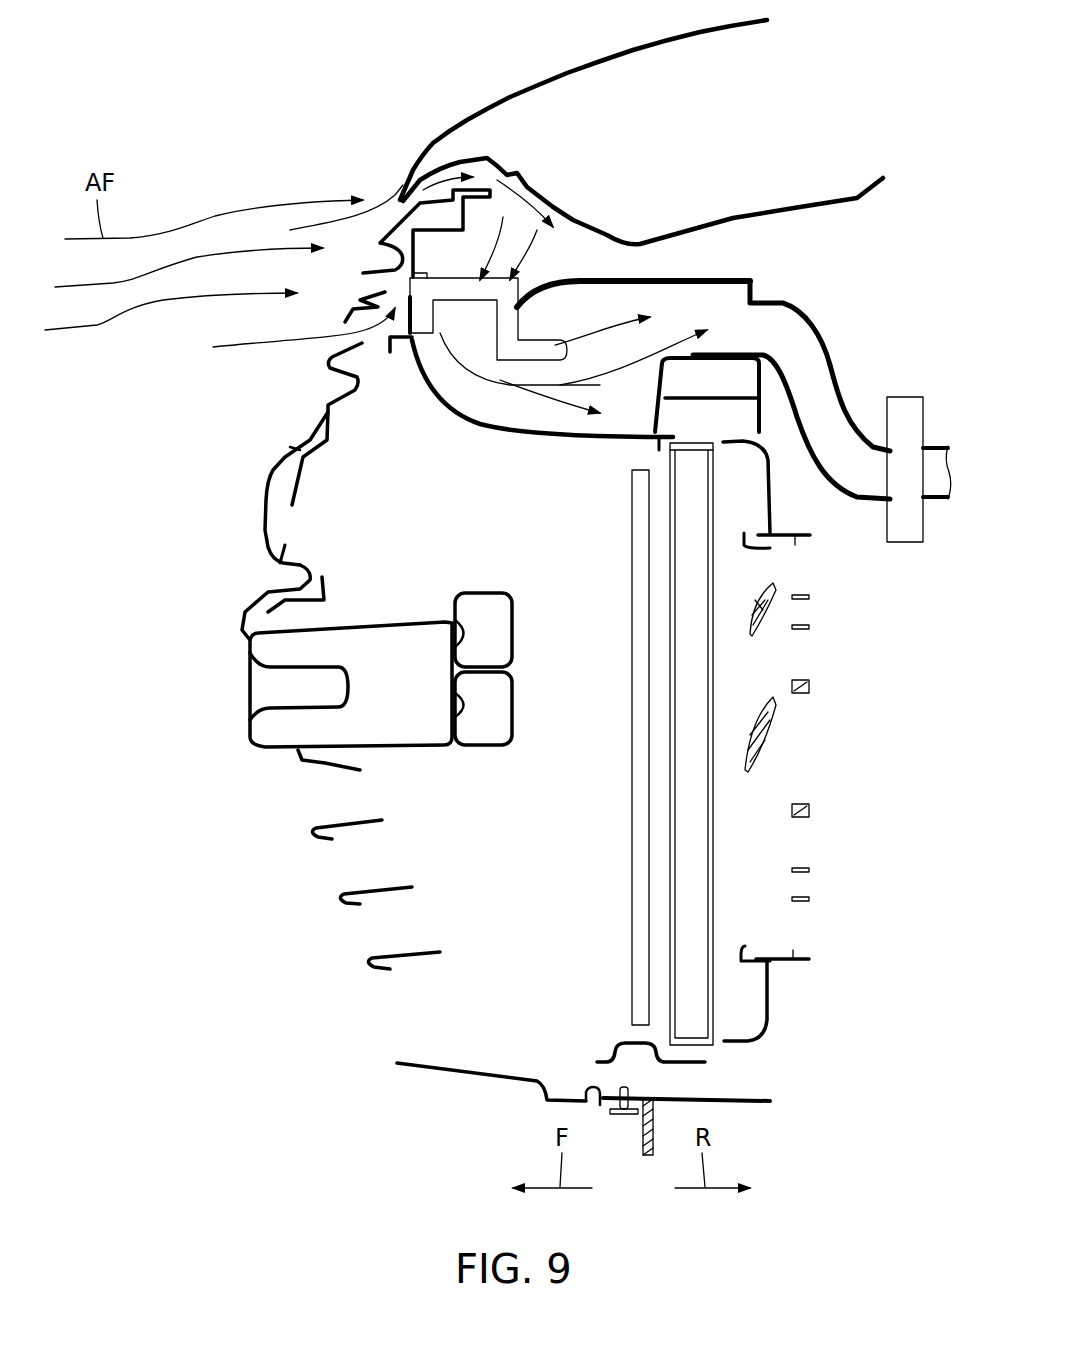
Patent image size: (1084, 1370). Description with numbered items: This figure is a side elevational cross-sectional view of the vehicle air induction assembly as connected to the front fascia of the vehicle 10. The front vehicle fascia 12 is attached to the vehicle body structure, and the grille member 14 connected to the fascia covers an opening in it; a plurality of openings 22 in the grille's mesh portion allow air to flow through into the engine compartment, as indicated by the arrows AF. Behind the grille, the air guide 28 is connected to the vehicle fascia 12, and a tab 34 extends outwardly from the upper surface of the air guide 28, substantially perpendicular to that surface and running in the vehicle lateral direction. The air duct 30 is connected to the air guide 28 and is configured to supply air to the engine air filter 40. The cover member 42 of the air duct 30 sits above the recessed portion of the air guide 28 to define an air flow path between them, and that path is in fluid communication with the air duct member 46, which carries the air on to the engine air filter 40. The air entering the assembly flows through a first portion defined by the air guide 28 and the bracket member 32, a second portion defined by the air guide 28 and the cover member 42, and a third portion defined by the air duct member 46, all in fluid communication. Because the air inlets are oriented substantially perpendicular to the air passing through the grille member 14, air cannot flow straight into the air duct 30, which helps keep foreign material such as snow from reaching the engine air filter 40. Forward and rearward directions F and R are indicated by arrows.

The vehicle 10 is at (277, 68).
The front vehicle fascia 12 is at (264, 527).
The grille member 14 is at (343, 313).
The openings 22 is at (370, 286).
The air guide 28 is at (510, 434).
The air duct 30 is at (790, 297).
The bracket member 32 is at (523, 283).
The tab 34 is at (384, 335).
The engine air filter 40 is at (905, 397).
The cover member 42 is at (690, 277).
The air duct member 46 is at (811, 467).